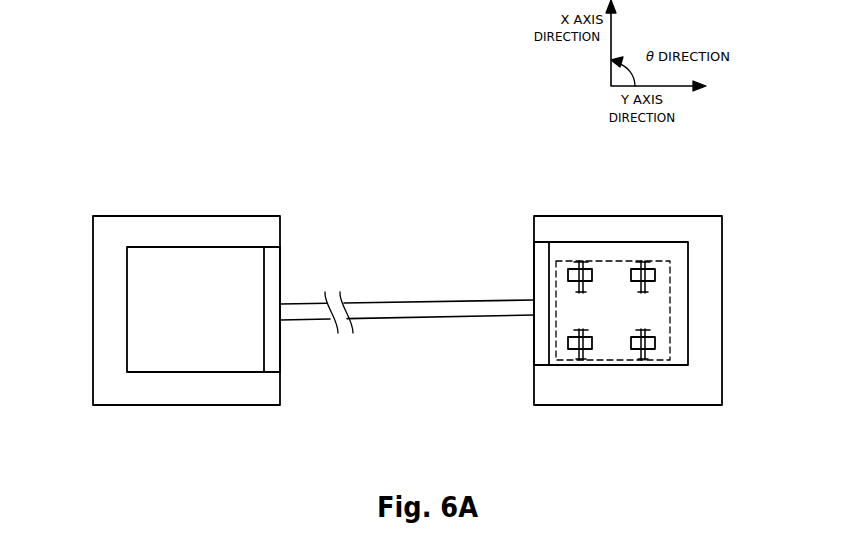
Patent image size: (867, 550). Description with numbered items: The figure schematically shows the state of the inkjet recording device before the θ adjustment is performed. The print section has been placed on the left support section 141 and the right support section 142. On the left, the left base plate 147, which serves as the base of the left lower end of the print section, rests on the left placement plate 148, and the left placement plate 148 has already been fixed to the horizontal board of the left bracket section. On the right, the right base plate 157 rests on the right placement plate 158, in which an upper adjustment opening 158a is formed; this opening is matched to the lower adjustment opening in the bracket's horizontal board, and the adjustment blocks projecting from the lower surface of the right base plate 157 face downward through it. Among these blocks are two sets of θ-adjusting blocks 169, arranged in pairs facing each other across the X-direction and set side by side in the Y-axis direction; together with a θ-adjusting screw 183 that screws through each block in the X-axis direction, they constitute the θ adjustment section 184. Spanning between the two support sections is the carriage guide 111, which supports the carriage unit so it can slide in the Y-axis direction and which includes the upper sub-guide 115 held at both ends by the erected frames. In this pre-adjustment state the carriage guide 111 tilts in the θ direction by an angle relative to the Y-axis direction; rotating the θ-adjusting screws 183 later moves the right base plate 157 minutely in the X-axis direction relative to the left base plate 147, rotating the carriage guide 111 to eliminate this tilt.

The left support section 141 is at (159, 273).
The right support section 142 is at (657, 326).
The left placement plate 148 is at (97, 235).
The left base plate 147 is at (136, 279).
The sub-guide 115 is at (275, 337).
The carriage guide 111 is at (418, 319).
The right placement plate 158 is at (712, 234).
The right base plate 157 is at (688, 276).
The upper adjustment opening 158a is at (670, 312).
The θ adjustment section 184 is at (603, 386).
The θ-adjusting block 169 is at (572, 348).
The θ-adjusting screw 183 is at (582, 354).